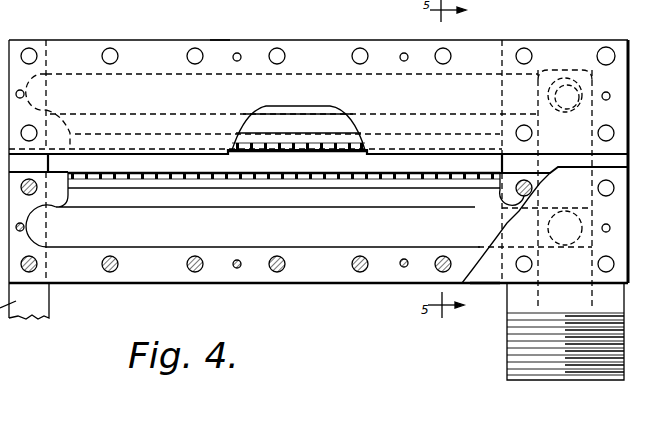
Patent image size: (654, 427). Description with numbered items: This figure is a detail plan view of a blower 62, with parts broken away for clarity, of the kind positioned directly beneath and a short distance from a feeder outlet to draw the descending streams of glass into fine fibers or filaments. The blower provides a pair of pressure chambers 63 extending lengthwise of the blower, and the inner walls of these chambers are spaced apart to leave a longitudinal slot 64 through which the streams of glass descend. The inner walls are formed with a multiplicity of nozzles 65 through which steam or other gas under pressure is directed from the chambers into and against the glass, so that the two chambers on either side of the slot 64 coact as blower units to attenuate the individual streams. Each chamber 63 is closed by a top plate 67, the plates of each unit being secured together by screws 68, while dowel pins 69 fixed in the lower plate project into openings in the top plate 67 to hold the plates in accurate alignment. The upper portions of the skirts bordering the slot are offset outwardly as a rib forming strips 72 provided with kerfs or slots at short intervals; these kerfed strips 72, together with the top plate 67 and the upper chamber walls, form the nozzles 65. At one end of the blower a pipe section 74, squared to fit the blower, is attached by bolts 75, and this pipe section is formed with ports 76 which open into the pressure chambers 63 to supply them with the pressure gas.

The blower 62 is at (127, 288).
The pressure chamber 63 is at (298, 112).
The longitudinal slot 64 is at (352, 153).
The nozzles 65 is at (314, 152).
The top plate 67 is at (218, 58).
The screws 68 is at (277, 58).
The dowel pins 69 is at (403, 54).
The strips 72 is at (190, 171).
The pipe section 74 is at (518, 315).
The bolts 75 is at (600, 188).
The ports 76 is at (562, 113).